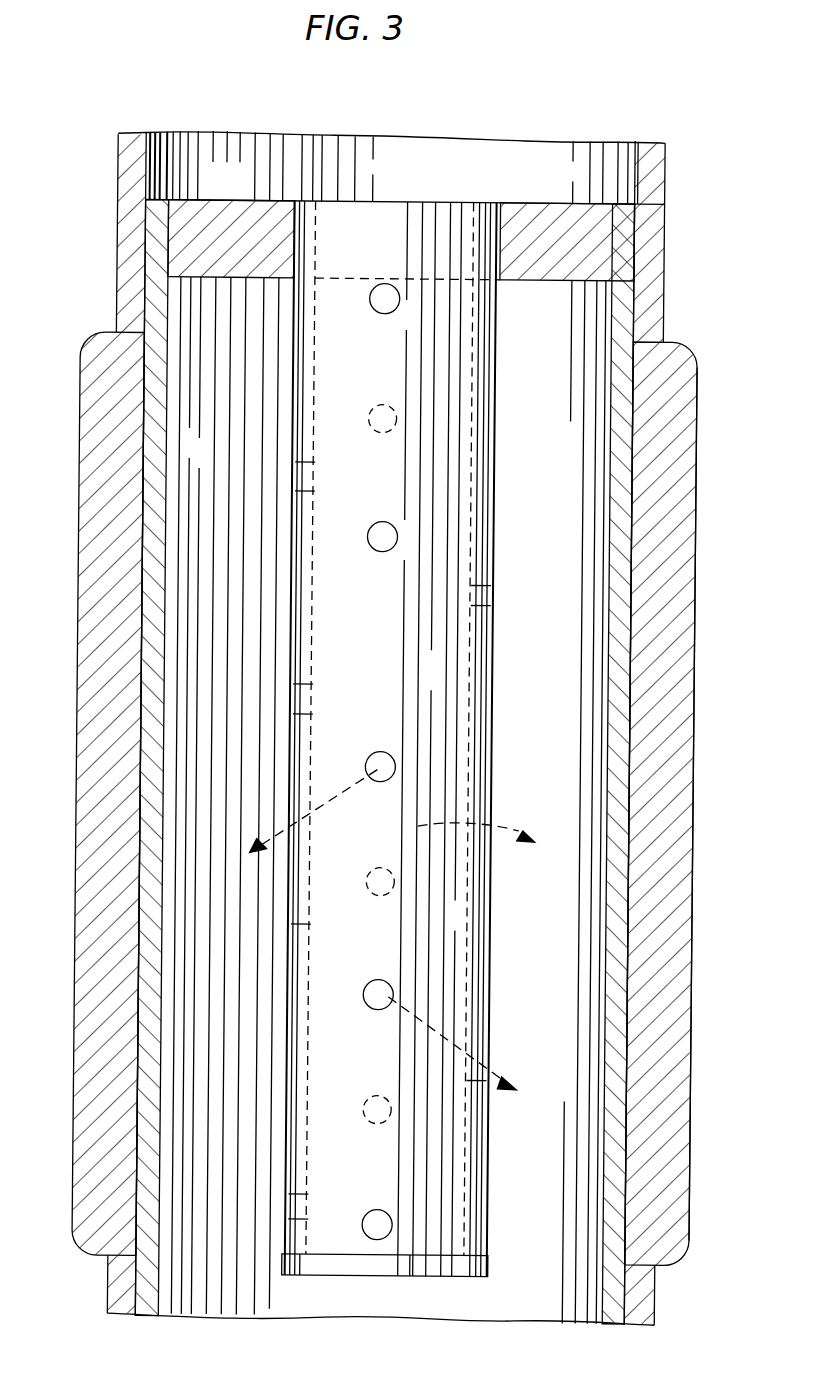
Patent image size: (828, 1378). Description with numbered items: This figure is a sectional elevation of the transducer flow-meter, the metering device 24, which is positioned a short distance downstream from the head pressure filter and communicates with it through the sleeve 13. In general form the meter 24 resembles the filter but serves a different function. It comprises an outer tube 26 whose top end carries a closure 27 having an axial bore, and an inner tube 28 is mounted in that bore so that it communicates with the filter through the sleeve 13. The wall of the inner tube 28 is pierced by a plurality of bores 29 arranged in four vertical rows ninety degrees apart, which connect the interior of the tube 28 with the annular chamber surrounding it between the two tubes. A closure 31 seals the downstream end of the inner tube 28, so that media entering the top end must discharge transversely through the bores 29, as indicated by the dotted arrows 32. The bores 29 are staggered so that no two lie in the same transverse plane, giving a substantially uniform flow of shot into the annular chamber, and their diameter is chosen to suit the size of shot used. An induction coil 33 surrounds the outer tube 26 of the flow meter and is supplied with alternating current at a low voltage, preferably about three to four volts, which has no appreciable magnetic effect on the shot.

The sleeve 13 is at (661, 236).
The metering device 24 is at (694, 494).
The outer tube 26 is at (165, 439).
The closure 27 is at (246, 206).
The inner tube 28 is at (488, 442).
The bores 29 is at (384, 311).
The closure 31 is at (425, 1270).
The dotted arrows 32 is at (328, 790).
The induction coil 33 is at (697, 642).